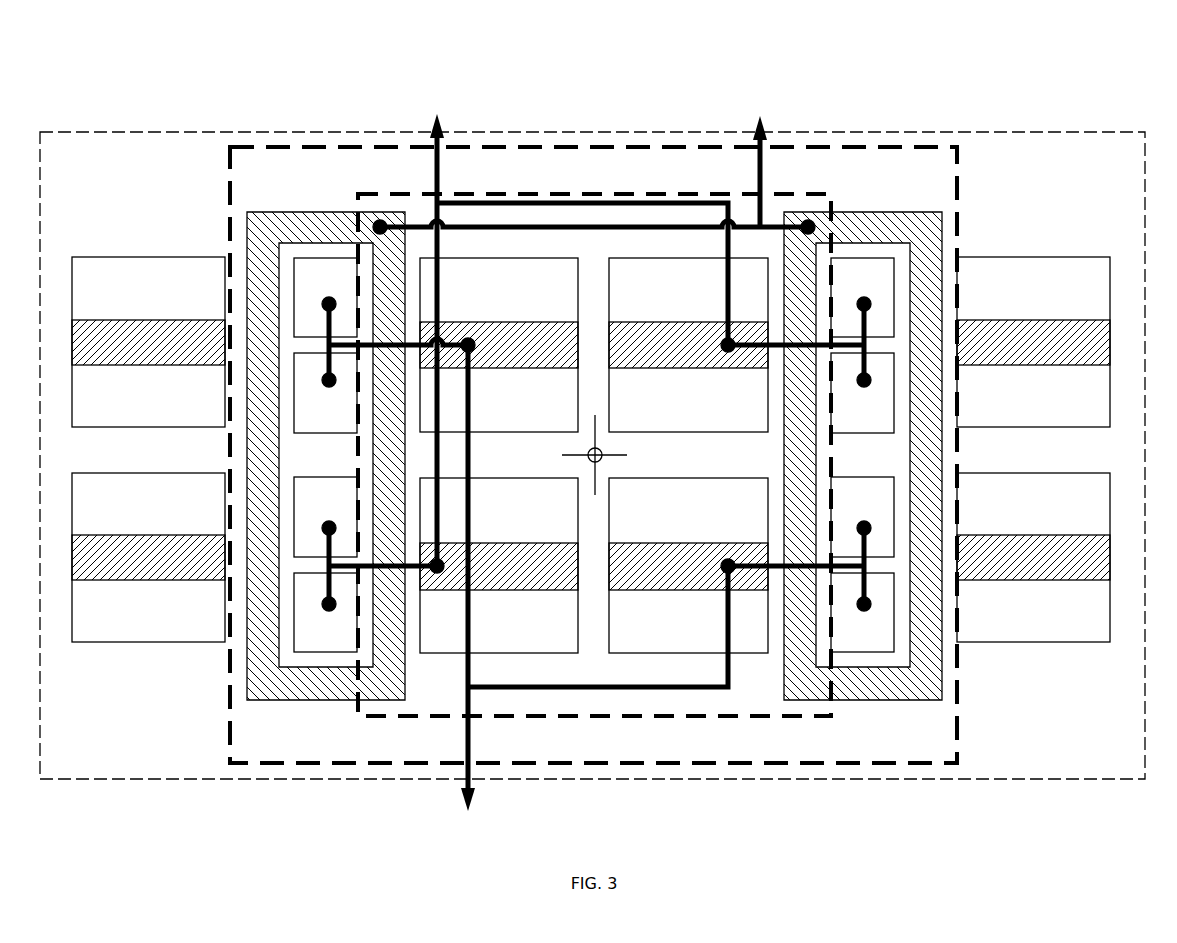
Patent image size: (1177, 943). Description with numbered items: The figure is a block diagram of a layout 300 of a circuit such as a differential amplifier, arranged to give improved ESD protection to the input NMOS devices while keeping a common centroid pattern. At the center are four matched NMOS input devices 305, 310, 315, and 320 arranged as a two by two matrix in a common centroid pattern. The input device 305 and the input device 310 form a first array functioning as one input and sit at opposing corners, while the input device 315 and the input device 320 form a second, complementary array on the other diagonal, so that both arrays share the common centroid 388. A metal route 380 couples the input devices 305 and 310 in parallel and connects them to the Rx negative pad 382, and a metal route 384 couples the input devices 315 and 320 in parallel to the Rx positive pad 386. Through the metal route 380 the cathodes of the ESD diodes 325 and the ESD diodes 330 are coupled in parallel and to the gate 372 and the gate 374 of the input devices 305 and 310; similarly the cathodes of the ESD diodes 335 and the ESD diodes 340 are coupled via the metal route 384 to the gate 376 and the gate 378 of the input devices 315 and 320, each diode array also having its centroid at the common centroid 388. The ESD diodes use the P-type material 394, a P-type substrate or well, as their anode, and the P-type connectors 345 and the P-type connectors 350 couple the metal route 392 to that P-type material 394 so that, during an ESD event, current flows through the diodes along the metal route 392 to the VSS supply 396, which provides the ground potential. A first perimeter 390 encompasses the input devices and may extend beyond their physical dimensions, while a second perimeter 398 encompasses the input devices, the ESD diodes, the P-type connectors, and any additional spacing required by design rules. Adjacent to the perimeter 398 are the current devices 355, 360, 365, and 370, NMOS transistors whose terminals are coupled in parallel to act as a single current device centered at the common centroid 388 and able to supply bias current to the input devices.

The layout 300 is at (602, 467).
The input device 305 is at (499, 345).
The input device 310 is at (688, 565).
The input device 315 is at (688, 345).
The input device 320 is at (499, 565).
The ESD diodes 325 is at (342, 280).
The ESD diodes 330 is at (848, 634).
The ESD diodes 335 is at (848, 280).
The ESD diodes 340 is at (342, 634).
The P-type connectors 345 is at (252, 213).
The P-type connectors 350 is at (940, 217).
The current device 355 is at (148, 342).
The current device 360 is at (1033, 557).
The current device 365 is at (1033, 342).
The current device 370 is at (148, 557).
The gate 372 is at (499, 345).
The gate 374 is at (688, 566).
The gate 376 is at (688, 345).
The gate 378 is at (499, 566).
The metal route 380 is at (670, 687).
The Rx negative pad 382 is at (467, 612).
The metal route 384 is at (440, 165).
The Rx positive pad 386 is at (434, 311).
The common centroid 388 is at (602, 455).
The first perimeter 390 is at (542, 718).
The metal route 392 is at (758, 165).
The P-type material 394 is at (1028, 132).
The VSS supply 396 is at (760, 140).
The second perimeter 398 is at (230, 720).